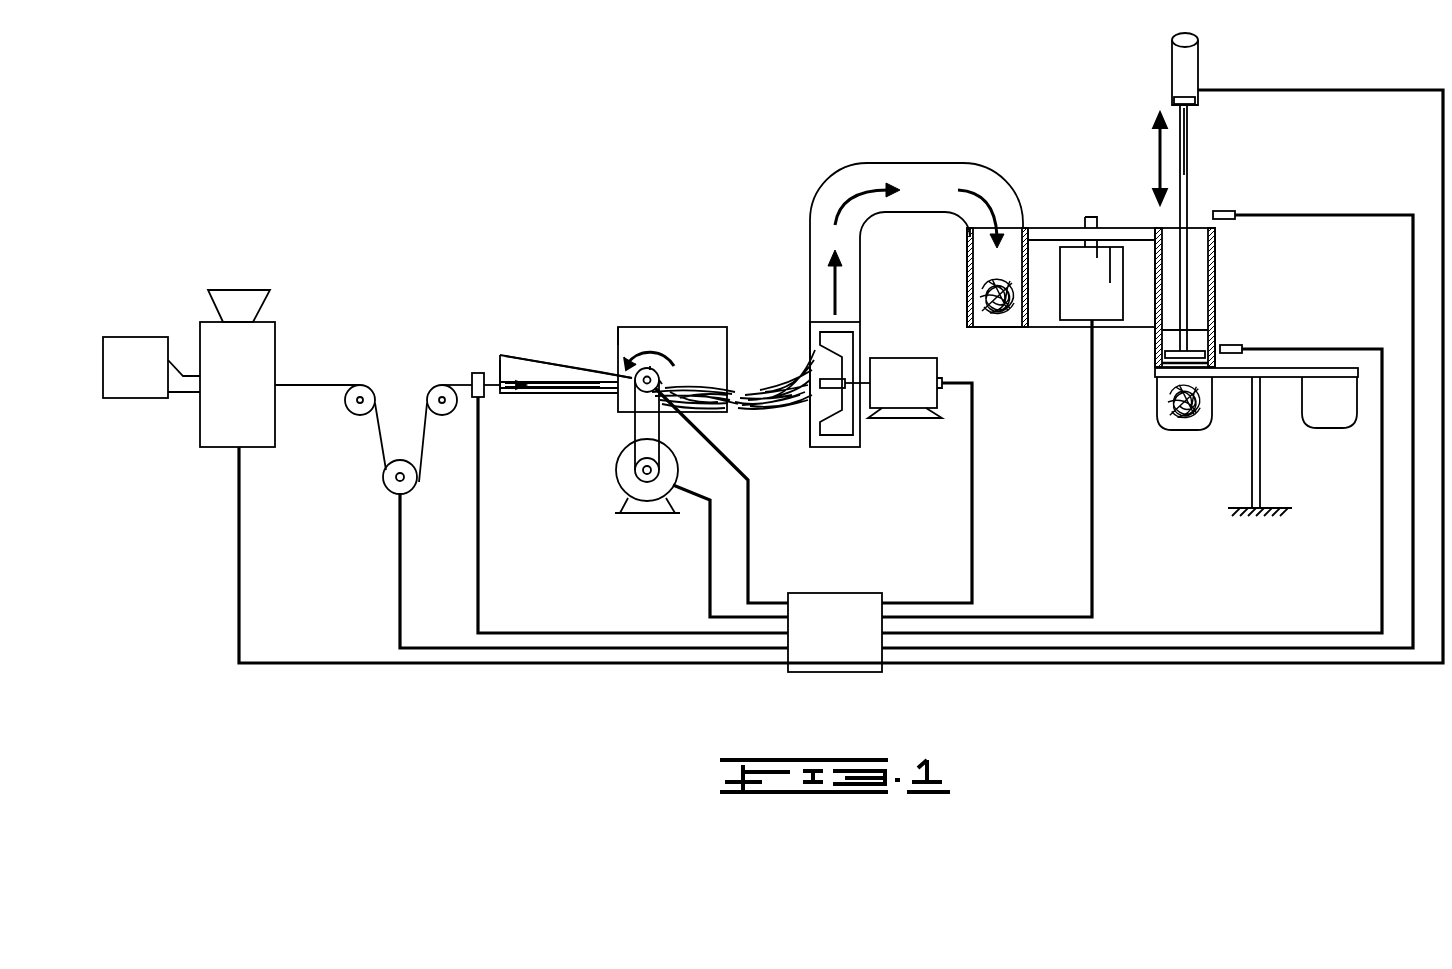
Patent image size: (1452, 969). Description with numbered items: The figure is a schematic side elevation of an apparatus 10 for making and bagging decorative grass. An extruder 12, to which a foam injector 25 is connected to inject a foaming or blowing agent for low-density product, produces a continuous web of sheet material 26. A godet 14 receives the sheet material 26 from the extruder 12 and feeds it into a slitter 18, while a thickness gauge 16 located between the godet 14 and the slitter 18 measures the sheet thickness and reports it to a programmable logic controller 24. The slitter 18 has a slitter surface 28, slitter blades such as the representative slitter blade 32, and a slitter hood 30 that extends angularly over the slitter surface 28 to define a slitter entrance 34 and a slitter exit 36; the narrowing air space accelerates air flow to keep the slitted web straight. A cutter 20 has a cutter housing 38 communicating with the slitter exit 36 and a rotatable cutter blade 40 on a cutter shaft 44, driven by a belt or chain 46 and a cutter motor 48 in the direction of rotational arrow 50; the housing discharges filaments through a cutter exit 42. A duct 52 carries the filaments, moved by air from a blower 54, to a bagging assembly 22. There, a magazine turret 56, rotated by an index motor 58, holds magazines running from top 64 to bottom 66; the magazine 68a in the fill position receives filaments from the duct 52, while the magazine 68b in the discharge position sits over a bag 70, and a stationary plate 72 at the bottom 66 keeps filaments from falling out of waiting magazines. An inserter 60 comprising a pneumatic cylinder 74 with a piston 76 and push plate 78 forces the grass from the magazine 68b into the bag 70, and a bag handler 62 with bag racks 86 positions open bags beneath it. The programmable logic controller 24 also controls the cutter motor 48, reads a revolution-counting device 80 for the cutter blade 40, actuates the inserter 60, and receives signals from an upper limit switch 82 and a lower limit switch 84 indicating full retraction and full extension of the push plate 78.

The apparatus for making and bagging decorative grass 10 is at (483, 145).
The extruder 12 is at (275, 322).
The godet 14 is at (386, 480).
The thickness gauge 16 is at (474, 373).
The slitter 18 is at (523, 342).
The cutter 20 is at (650, 310).
The bagging assembly 22 is at (1123, 214).
The programmable logic controller 24 is at (845, 672).
The foam injector 25 is at (137, 337).
The sheet material 26 is at (325, 383).
The slitter surface 28 is at (548, 388).
The slitter hood 30 is at (540, 357).
The slitter blade 32 is at (522, 388).
The slitter entrance 34 is at (500, 377).
The slitter exit 36 is at (618, 382).
The cutter housing 38 is at (623, 327).
The cutter blade 40 is at (630, 374).
The cutter exit 42 is at (740, 410).
The cutter shaft 44 is at (672, 355).
The belt or chain 46 is at (636, 436).
The cutter motor 48 is at (620, 488).
The rotational arrow 50 is at (660, 340).
The duct 52 is at (902, 163).
The blower 54 is at (900, 367).
The magazine turret 56 is at (1060, 214).
The index motor 58 is at (1082, 308).
The inserter 60 is at (1208, 51).
The bag handler 62 is at (1270, 458).
The top 64 is at (1145, 225).
The bottom 66 is at (1143, 330).
The magazine in fill position 68a is at (990, 258).
The magazine in discharge position 68b is at (1200, 272).
The bag 70 is at (1173, 430).
The stationary plate 72 is at (1043, 327).
The pneumatic cylinder 74 is at (1180, 78).
The piston 76 is at (1190, 148).
The push plate 78 is at (1195, 330).
The revolution sensing and counting device 80 is at (660, 380).
The upper limit switch 82 is at (1228, 211).
The lower limit switch 84 is at (1242, 347).
The bag rack 86 is at (1237, 380).